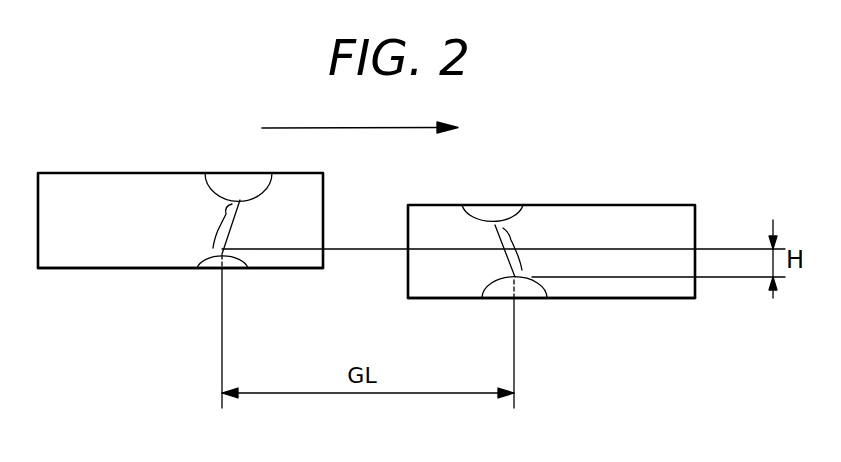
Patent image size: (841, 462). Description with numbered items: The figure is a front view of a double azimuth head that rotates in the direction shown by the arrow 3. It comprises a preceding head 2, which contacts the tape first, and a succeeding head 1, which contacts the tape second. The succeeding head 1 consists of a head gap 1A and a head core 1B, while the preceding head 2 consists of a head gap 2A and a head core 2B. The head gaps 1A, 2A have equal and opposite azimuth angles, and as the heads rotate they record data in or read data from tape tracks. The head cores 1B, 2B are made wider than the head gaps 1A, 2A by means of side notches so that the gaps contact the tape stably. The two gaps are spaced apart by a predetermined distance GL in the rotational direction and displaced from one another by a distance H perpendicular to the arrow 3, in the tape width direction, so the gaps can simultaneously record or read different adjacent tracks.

The succeeding head 1 is at (88, 173).
The head gap 1A is at (207, 230).
The head core 1B is at (75, 259).
The preceding head 2 is at (617, 205).
The head gap 2A is at (517, 238).
The head core 2B is at (630, 290).
The rotational direction 3 is at (330, 128).